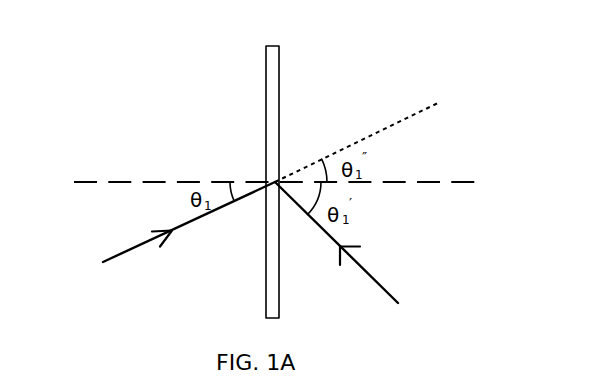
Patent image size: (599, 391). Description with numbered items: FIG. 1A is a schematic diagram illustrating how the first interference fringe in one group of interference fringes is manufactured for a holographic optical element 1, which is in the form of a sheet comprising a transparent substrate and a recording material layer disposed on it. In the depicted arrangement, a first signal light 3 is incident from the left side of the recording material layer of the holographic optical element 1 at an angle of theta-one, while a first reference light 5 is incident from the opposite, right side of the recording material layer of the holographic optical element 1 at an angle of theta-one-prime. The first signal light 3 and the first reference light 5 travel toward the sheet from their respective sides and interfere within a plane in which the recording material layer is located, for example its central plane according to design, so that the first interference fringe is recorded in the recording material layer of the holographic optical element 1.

The holographic optical element 1 is at (279, 46).
The first signal light 3 is at (122, 257).
The first reference light 5 is at (395, 298).